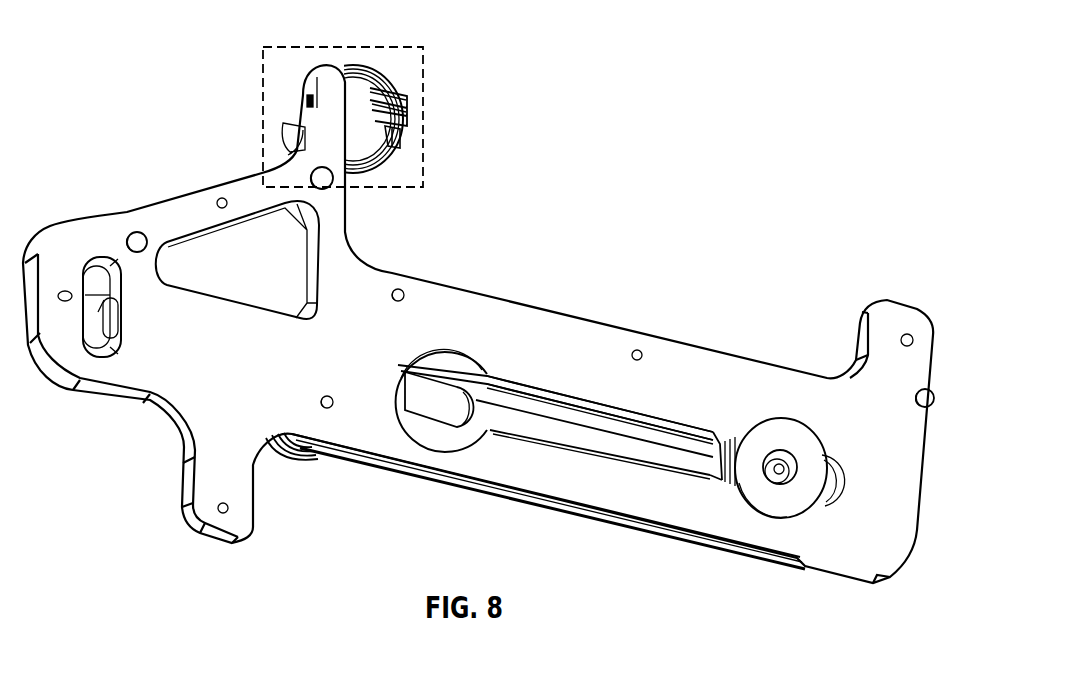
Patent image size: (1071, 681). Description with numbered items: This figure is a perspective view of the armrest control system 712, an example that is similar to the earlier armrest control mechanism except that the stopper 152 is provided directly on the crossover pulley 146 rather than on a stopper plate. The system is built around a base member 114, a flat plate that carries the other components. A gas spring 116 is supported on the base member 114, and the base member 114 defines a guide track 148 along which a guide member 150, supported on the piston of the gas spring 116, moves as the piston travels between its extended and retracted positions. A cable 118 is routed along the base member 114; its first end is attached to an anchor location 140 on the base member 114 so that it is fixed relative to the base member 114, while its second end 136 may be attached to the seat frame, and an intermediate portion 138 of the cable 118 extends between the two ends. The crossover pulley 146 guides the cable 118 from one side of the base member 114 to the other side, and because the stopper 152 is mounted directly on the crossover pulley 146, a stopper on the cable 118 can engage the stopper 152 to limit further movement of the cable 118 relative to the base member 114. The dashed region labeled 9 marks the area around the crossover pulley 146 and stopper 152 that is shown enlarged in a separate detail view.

The detail view area 9 is at (346, 44).
The base member 114 is at (597, 345).
The gas spring 116 is at (423, 392).
The cable 118 is at (520, 397).
The second end 136 is at (397, 150).
The intermediate portion 138 is at (657, 442).
The anchor location 140 is at (297, 462).
The crossover pulley 146 is at (375, 80).
The guide track 148 is at (598, 473).
The guide member 150 is at (782, 480).
The stopper 152 is at (408, 111).
The armrest control system 712 is at (428, 503).